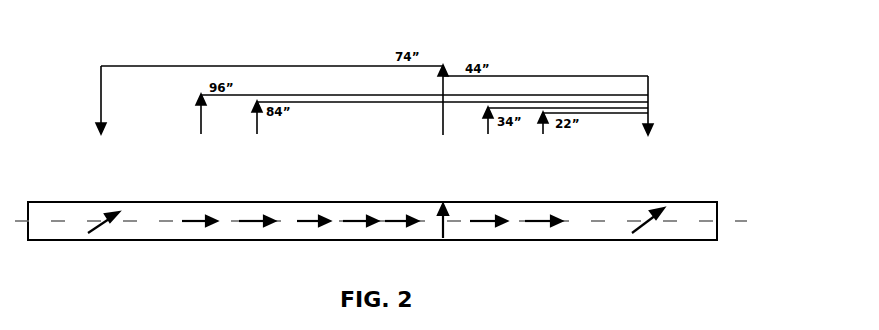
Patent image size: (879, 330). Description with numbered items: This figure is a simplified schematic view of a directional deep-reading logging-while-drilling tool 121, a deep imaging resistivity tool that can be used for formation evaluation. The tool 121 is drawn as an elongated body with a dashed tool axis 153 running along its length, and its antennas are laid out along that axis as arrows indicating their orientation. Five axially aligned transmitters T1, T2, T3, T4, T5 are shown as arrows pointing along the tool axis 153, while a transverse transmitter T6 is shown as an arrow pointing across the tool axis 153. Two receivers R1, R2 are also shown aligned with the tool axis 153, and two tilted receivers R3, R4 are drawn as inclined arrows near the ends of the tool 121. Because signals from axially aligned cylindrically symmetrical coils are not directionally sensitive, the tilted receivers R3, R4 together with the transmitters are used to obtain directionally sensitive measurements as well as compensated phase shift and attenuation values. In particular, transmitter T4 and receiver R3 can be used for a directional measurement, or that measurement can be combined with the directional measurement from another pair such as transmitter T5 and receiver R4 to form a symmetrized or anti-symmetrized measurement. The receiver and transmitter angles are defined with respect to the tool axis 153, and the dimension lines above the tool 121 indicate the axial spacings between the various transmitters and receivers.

The directional deep-reading logging-while-drilling tool 121 is at (244, 260).
The tool axis 153 is at (730, 213).
The receiver R1 is at (360, 197).
The receiver R2 is at (401, 197).
The tilted receiver R3 is at (103, 200).
The tilted receiver R4 is at (648, 200).
The axially aligned transmitter T1 is at (313, 197).
The axially aligned transmitter T2 is at (488, 197).
The axially aligned transmitter T3 is at (257, 197).
The axially aligned transmitter T4 is at (543, 197).
The axially aligned transmitter T5 is at (199, 197).
The transverse transmitter T6 is at (442, 203).